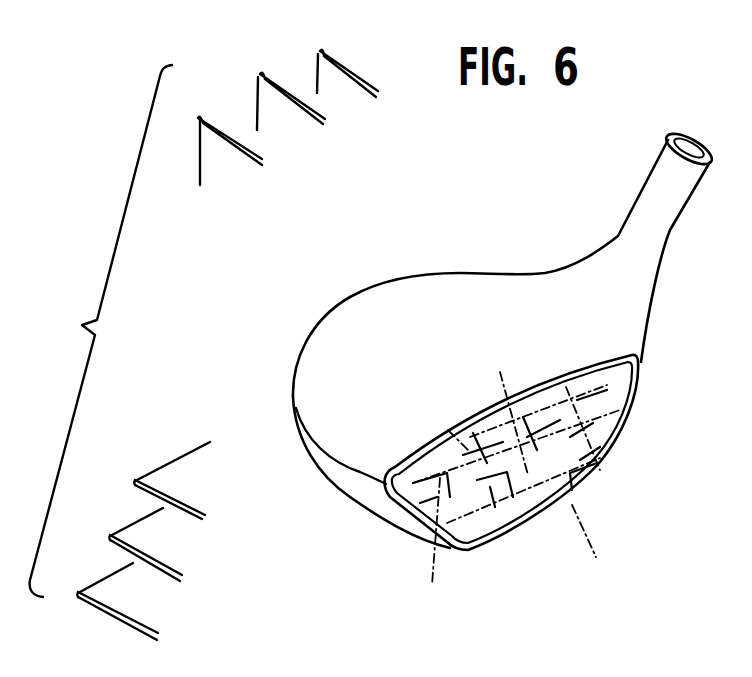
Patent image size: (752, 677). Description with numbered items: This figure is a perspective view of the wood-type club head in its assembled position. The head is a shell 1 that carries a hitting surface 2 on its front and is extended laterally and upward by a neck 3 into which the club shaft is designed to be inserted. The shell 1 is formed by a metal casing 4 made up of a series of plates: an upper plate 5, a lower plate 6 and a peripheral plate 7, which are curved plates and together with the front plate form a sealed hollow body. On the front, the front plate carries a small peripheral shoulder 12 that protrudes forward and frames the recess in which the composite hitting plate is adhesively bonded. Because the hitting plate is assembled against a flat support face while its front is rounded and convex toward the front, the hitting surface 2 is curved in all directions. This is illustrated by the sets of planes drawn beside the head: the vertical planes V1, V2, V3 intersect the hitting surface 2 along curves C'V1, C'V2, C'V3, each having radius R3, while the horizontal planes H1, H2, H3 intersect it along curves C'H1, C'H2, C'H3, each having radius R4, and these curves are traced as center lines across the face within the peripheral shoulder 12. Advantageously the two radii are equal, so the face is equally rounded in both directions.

The shell 1 is at (507, 377).
The hitting surface 2 is at (550, 447).
The neck 3 is at (670, 232).
The metal casing 4 is at (323, 323).
The upper plate 5 is at (444, 308).
The lower plate 6 is at (373, 517).
The peripheral plate 7 is at (337, 477).
The peripheral shoulder 12 is at (641, 378).
The vertical plane V1 is at (212, 138).
The vertical plane V2 is at (272, 105).
The vertical plane V3 is at (330, 80).
The horizontal plane H1 is at (168, 475).
The horizontal plane H2 is at (137, 528).
The horizontal plane H3 is at (98, 590).
The curve C'V1 is at (423, 491).
The curve C'V2 is at (501, 406).
The curve C'V3 is at (623, 463).
The curve C'H1 is at (507, 518).
The curve C'H2 is at (523, 532).
The curve C'H3 is at (552, 488).